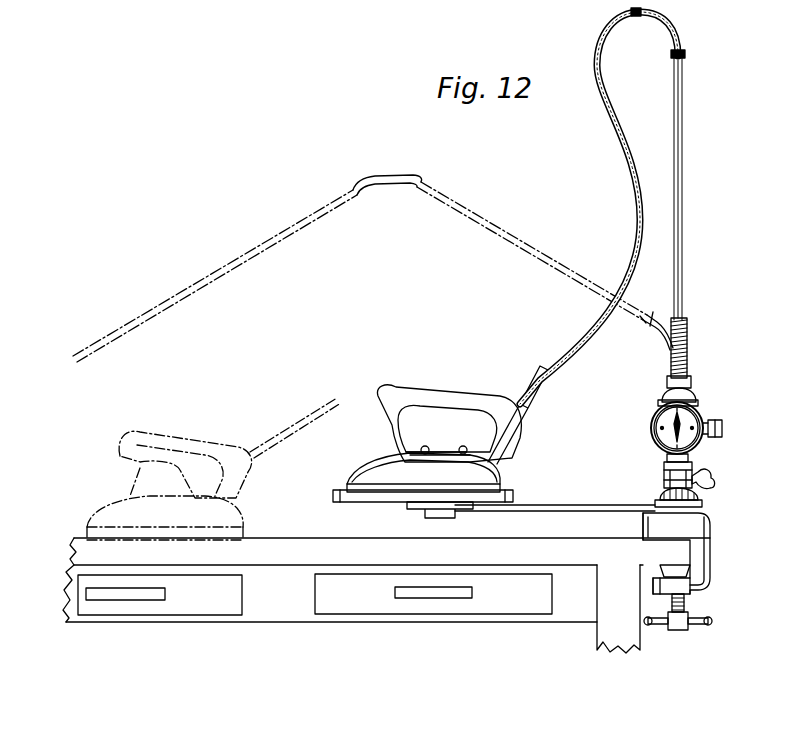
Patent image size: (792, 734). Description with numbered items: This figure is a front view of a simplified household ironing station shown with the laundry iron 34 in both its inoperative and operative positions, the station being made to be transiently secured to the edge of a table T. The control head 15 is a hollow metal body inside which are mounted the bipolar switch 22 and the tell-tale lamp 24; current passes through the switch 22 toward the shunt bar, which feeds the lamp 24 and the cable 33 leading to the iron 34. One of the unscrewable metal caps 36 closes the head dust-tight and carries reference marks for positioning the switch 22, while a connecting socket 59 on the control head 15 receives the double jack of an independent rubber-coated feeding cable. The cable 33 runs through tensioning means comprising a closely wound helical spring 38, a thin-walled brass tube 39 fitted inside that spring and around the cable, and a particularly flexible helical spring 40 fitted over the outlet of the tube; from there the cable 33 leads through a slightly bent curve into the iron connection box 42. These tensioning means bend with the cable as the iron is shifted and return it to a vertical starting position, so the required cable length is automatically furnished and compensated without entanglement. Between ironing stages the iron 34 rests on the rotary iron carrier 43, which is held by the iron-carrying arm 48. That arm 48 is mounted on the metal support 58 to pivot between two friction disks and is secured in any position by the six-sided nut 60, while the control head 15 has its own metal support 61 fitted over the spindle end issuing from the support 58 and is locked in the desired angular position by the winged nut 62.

The ironing table T is at (280, 543).
The control head 15 is at (655, 441).
The bipolar switch 22 is at (672, 427).
The tell-tale lamp 24 is at (664, 392).
The cable 33 is at (630, 148).
The laundry iron 34 is at (388, 472).
The metal cap 36 is at (670, 445).
The helical spring 38 is at (688, 338).
The brass tube 39 is at (685, 110).
The helical spring 40 is at (683, 48).
The iron connection box 42 is at (506, 448).
The iron carrier 43 is at (516, 497).
The iron-carrying arm 48 is at (566, 510).
The metal support 58 is at (707, 530).
The connecting socket 59 is at (722, 428).
The six-sided nut 60 is at (698, 497).
The metal support 61 is at (692, 460).
The winged nut 62 is at (716, 480).